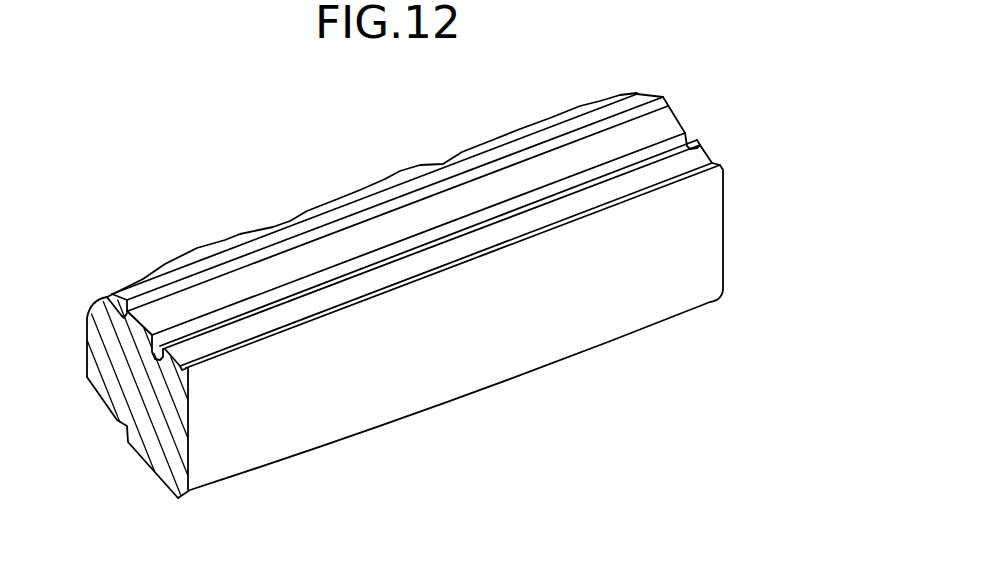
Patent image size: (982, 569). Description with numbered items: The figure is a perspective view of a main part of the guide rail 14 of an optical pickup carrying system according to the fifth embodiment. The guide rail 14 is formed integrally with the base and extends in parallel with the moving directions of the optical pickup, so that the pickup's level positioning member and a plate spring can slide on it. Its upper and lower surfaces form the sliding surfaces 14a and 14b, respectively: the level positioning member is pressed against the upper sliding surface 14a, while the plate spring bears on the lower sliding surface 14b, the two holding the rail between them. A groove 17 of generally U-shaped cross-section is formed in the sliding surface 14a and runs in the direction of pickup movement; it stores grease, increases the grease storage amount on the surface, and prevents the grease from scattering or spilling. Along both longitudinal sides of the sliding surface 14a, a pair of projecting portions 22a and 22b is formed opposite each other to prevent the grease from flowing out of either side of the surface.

The guide rail 14 is at (687, 221).
The sliding surface 14a is at (398, 230).
The sliding surface 14b is at (140, 461).
The groove 17 is at (689, 140).
The projecting portion 22a is at (664, 93).
The projecting portion 22b is at (723, 163).